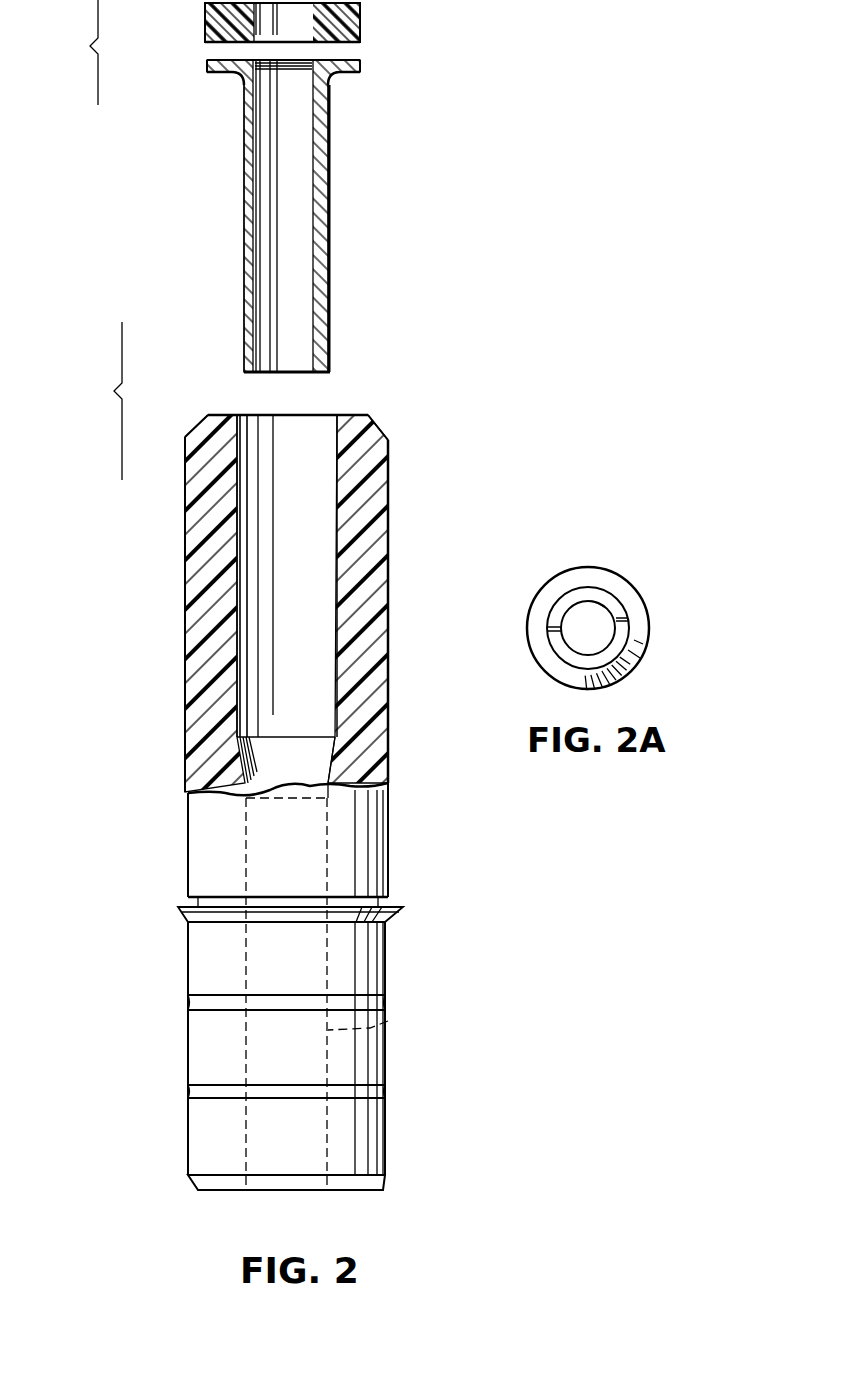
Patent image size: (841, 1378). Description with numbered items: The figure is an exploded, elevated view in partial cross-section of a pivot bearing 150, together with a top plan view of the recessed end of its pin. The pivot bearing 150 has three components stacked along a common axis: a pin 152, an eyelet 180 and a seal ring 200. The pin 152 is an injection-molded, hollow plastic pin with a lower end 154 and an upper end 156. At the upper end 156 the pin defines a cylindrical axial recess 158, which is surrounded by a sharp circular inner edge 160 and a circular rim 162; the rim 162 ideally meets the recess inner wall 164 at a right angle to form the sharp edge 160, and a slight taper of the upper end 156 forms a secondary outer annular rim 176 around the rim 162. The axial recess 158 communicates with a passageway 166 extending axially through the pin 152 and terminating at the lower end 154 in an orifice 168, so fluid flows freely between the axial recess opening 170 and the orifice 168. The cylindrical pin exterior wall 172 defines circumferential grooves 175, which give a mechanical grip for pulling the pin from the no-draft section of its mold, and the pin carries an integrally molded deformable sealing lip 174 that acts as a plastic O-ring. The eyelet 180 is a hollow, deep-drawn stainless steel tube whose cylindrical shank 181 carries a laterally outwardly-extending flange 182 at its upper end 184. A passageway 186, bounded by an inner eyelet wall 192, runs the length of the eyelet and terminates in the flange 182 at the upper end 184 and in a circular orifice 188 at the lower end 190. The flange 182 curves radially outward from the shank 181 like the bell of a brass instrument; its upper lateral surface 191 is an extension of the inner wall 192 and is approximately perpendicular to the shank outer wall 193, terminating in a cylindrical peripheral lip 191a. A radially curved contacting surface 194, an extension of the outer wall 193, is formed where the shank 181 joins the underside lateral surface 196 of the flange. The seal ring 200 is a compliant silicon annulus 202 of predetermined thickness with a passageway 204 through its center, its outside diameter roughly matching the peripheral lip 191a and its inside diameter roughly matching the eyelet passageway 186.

In FIG. 2, the pivot bearing 150 is at (120, 570).
In FIG. 2, the pin 152 is at (412, 842).
In FIG. 2A, the pin 152 is at (538, 682).
In FIG. 2, the lower end 154 is at (406, 1142).
In FIG. 2, the upper end 156 is at (413, 470).
In FIG. 2A, the upper end 156 is at (548, 562).
In FIG. 2, the axial recess 158 is at (303, 452).
In FIG. 2A, the axial recess 158 is at (583, 600).
In FIG. 2, the inner edge 160 is at (338, 414).
In FIG. 2A, the inner edge 160 is at (598, 592).
In FIG. 2, the rim 162 is at (366, 414).
In FIG. 2A, the rim 162 is at (622, 610).
In FIG. 2, the recess inner wall 164 is at (247, 472).
In FIG. 2A, the recess inner wall 164 is at (568, 618).
In FIG. 2, the passageway 166 is at (388, 1021).
In FIG. 2, the orifice 168 is at (277, 1197).
In FIG. 2, the axial recess opening 170 is at (272, 412).
In FIG. 2, the pin exterior wall 172 is at (200, 857).
In FIG. 2A, the pin exterior wall 172 is at (622, 683).
In FIG. 2, the deformable sealing lip 174 is at (400, 909).
In FIG. 2, the circumferential grooves 175 is at (200, 902).
In FIG. 2, the outer annular rim 176 is at (386, 431).
In FIG. 2A, the outer annular rim 176 is at (638, 627).
In FIG. 2, the eyelet 180 is at (385, 217).
In FIG. 2, the shank 181 is at (329, 188).
In FIG. 2, the flange 182 is at (376, 60).
In FIG. 2, the upper end 184 is at (341, 86).
In FIG. 2, the passageway 186 is at (272, 243).
In FIG. 2, the orifice 188 is at (262, 385).
In FIG. 2, the lower end 190 is at (343, 380).
In FIG. 2, the upper lateral surface 191 is at (362, 60).
In FIG. 2, the peripheral lip 191a is at (361, 70).
In FIG. 2, the inner eyelet wall 192 is at (258, 208).
In FIG. 2, the outer wall 193 is at (250, 287).
In FIG. 2, the contacting surface 194 is at (237, 68).
In FIG. 2, the underside lateral surface 196 is at (207, 71).
In FIG. 2, the seal ring 200 is at (372, 18).
In FIG. 2, the silicon annulus 202 is at (205, 14).
In FIG. 2, the passageway 204 is at (206, 32).